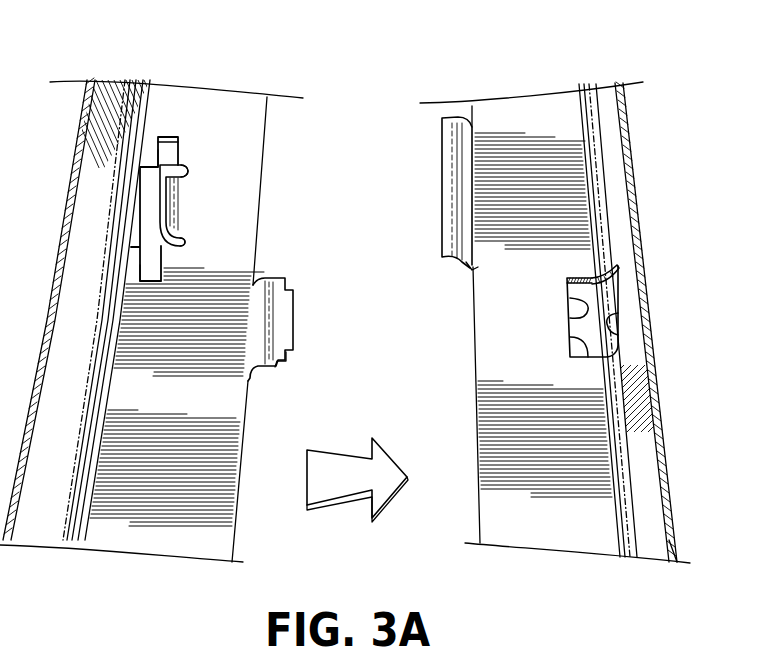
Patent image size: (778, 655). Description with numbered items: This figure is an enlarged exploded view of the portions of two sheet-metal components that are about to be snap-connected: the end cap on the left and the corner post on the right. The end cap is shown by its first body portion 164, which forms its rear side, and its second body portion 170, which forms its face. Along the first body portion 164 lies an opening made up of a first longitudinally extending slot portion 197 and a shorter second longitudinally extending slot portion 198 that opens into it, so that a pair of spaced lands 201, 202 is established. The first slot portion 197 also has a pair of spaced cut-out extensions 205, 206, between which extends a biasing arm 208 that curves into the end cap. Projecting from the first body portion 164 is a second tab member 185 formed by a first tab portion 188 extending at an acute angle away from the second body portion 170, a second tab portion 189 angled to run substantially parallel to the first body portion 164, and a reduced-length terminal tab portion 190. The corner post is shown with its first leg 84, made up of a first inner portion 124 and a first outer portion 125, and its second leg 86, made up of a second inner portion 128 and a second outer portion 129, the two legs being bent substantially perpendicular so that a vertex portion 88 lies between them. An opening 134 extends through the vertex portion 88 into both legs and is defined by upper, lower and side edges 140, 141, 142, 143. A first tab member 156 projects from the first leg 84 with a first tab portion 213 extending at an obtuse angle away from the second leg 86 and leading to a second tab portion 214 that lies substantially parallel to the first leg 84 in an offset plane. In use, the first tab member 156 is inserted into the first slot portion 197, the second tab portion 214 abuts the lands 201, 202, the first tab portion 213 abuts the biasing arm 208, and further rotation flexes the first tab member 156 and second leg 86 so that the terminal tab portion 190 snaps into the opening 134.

The first body portion 164 is at (230, 117).
The second body portion 170 is at (115, 92).
The first tab portion 188 is at (257, 381).
The second longitudinally extending slot portion 198 is at (147, 207).
The first longitudinally extending slot portion 197 is at (168, 136).
The land 201 is at (152, 155).
The land 202 is at (133, 265).
The biasing arm 208 is at (177, 205).
The cut-out extension 205 is at (190, 173).
The cut-out extension 206 is at (182, 242).
The second tab member 185 is at (317, 295).
The terminal tab portion 190 is at (288, 320).
The second tab portion 189 is at (273, 380).
The first inner portion 124 is at (570, 108).
The first outer portion 125 is at (493, 117).
The first leg 84 is at (535, 128).
The vertex portion 88 is at (628, 557).
The second leg 86 is at (617, 140).
The second outer portion 129 is at (653, 477).
The second inner portion 128 is at (645, 555).
The first tab member 156 is at (413, 185).
The second tab portion 214 is at (445, 207).
The first tab portion 213 is at (467, 268).
The opening 134 is at (620, 298).
The upper edge 140 is at (608, 306).
The side edge 143 is at (570, 298).
The lower edge 141 is at (570, 337).
The side edge 142 is at (623, 333).